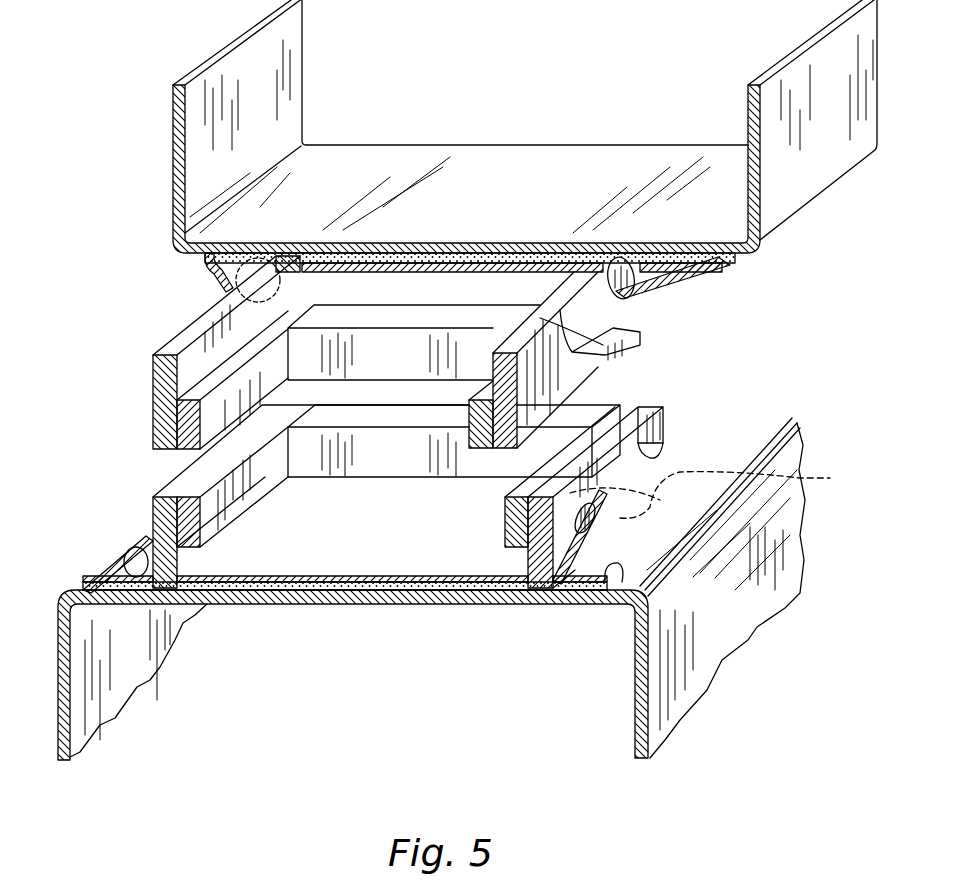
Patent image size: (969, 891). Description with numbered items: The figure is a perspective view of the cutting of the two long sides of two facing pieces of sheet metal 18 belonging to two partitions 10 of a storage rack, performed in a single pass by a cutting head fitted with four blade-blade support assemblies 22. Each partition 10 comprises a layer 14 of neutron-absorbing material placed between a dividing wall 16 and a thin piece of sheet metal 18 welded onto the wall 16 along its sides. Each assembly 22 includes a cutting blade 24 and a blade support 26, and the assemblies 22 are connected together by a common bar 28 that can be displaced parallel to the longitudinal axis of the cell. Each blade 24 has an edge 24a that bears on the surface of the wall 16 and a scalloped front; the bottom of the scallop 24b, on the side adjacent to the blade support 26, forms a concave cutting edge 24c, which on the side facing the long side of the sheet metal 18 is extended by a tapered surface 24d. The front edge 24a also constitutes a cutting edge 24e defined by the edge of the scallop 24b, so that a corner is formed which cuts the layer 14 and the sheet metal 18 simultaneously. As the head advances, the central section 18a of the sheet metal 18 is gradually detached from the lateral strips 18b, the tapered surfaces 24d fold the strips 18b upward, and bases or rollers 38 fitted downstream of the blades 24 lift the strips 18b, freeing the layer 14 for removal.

The partition 10 is at (537, 238).
The layer of neutron-absorbing material 14 is at (270, 595).
The dividing wall 16 is at (302, 243).
The sheet metal 18 is at (428, 250).
The central section of sheet metal 18a is at (343, 605).
The lateral strips of sheet metal 18b is at (215, 280).
The blade-blade support assembly 22 is at (401, 422).
The cutting blade 24 is at (177, 340).
The edge of cutting blade 24a is at (575, 607).
The scallop 24b is at (640, 445).
The concave cutting edge 24c is at (570, 500).
The tapered surface 24d is at (590, 523).
The cutting edge 24e is at (720, 491).
The blade support 26 is at (193, 390).
The common bar 28 is at (407, 318).
The bases or rollers 38 is at (280, 297).